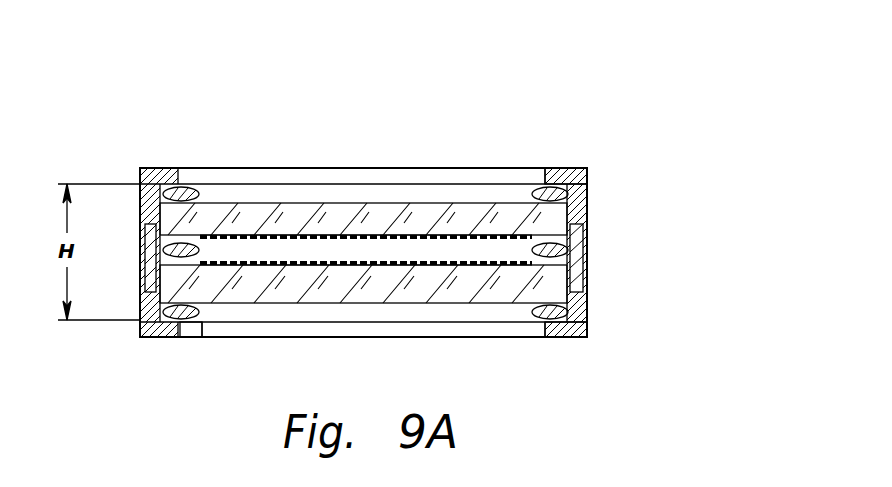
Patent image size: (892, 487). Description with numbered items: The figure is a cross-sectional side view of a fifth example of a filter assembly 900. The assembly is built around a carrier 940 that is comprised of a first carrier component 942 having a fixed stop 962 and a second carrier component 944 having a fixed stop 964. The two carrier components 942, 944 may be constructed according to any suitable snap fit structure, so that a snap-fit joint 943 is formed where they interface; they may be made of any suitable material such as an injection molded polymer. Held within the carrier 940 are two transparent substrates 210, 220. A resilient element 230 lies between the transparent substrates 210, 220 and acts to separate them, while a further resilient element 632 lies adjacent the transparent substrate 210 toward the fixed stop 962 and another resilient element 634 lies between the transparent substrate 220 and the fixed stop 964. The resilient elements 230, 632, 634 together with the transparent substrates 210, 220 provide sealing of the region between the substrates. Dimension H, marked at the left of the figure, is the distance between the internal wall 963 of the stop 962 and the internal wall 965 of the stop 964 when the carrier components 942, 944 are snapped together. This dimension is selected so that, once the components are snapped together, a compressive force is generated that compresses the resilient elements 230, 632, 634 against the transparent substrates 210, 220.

The filter assembly 900 is at (624, 115).
The carrier 940 is at (597, 171).
The first carrier component 942 is at (588, 192).
The snap-fit joint 943 is at (588, 250).
The second carrier component 944 is at (588, 322).
The fixed stop 962 is at (557, 174).
The internal wall 963 is at (193, 184).
The fixed stop 964 is at (560, 338).
The internal wall 965 is at (202, 324).
The resilient element 632 is at (205, 240).
The resilient element 634 is at (205, 315).
The transparent substrate 210 is at (428, 212).
The transparent substrate 220 is at (428, 285).
The resilient element 230 is at (237, 235).